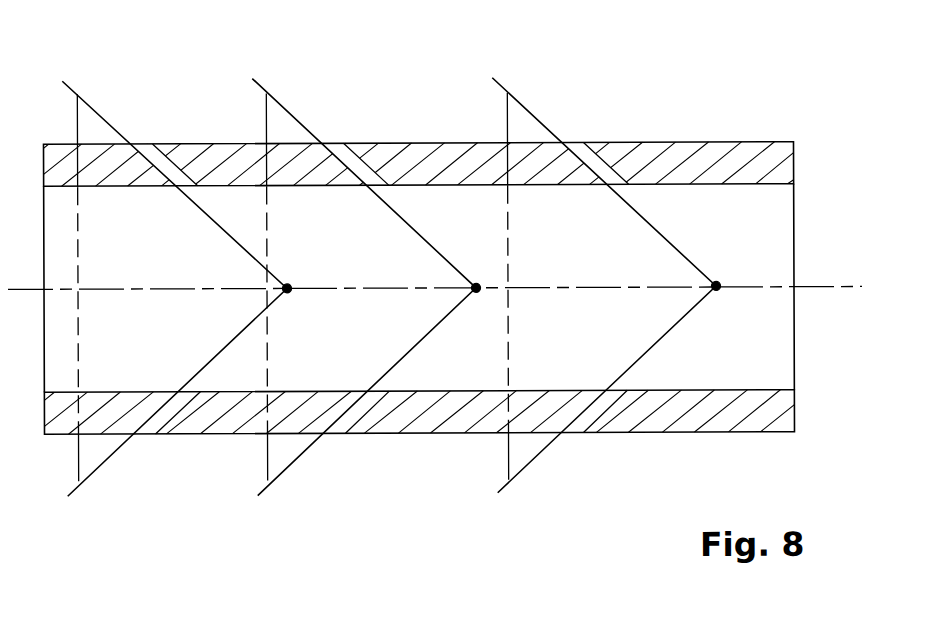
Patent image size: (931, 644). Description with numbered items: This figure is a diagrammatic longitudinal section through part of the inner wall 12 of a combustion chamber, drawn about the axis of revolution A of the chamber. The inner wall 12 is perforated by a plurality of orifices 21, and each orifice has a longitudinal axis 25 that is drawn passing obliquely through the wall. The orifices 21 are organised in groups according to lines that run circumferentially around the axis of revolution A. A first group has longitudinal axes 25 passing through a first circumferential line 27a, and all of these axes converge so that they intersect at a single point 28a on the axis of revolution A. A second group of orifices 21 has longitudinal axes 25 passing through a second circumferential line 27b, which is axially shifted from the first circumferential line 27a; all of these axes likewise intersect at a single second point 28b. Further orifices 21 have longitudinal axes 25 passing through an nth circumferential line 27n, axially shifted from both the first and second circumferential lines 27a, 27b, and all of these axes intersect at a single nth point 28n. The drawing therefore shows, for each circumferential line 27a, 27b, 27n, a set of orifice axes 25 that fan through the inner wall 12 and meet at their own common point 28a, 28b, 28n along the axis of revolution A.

The inner wall 12 is at (740, 141).
The orifices 21 is at (167, 165).
The longitudinal axes 25 is at (100, 112).
The first line 27a is at (77, 457).
The second line 27b is at (267, 455).
The nth line 27n is at (508, 455).
The single point 28a is at (287, 288).
The second point 28b is at (476, 288).
The nth point 28n is at (717, 287).
The axis of revolution A is at (833, 285).